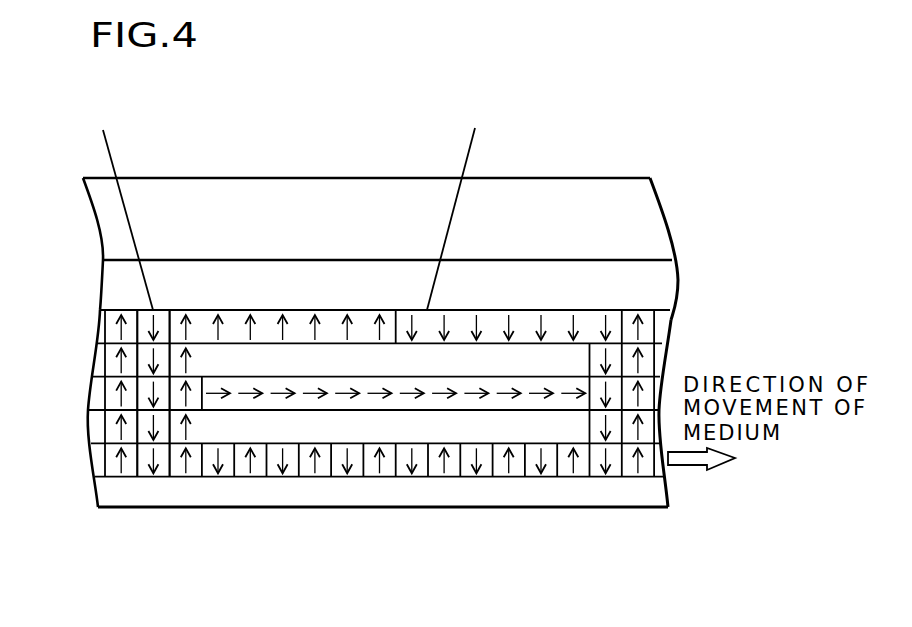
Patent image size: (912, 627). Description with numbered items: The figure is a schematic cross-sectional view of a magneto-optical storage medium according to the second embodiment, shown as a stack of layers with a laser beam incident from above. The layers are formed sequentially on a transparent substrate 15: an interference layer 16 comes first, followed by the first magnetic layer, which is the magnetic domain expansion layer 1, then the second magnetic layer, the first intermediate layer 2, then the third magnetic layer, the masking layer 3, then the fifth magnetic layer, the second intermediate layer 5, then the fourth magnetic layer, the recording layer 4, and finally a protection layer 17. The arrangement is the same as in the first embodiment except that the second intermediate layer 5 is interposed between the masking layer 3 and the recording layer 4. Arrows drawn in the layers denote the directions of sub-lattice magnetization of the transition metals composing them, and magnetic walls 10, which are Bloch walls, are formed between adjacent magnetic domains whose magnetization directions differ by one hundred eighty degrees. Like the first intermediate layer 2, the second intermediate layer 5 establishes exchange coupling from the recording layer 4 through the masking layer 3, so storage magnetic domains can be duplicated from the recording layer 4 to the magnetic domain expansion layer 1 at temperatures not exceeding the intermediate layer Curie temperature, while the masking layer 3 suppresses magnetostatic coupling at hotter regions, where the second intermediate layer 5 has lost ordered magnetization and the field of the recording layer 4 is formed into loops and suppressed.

The magnetic domain expansion layer 1 is at (99, 326).
The first intermediate layer 2 is at (96, 364).
The masking layer 3 is at (93, 398).
The second intermediate layer 5 is at (97, 425).
The recording layer 4 is at (97, 462).
The magnetic walls 10 is at (137, 478).
The transparent substrate 15 is at (662, 228).
The interference layer 16 is at (668, 286).
The protection layer 17 is at (660, 490).